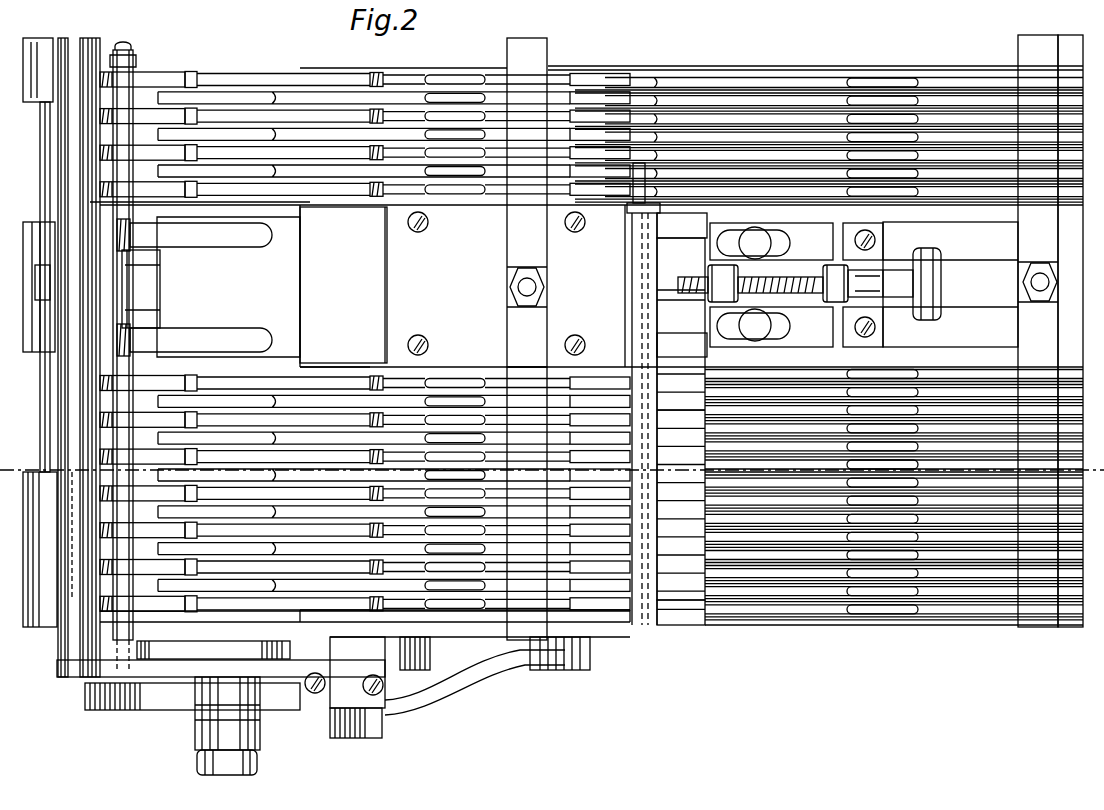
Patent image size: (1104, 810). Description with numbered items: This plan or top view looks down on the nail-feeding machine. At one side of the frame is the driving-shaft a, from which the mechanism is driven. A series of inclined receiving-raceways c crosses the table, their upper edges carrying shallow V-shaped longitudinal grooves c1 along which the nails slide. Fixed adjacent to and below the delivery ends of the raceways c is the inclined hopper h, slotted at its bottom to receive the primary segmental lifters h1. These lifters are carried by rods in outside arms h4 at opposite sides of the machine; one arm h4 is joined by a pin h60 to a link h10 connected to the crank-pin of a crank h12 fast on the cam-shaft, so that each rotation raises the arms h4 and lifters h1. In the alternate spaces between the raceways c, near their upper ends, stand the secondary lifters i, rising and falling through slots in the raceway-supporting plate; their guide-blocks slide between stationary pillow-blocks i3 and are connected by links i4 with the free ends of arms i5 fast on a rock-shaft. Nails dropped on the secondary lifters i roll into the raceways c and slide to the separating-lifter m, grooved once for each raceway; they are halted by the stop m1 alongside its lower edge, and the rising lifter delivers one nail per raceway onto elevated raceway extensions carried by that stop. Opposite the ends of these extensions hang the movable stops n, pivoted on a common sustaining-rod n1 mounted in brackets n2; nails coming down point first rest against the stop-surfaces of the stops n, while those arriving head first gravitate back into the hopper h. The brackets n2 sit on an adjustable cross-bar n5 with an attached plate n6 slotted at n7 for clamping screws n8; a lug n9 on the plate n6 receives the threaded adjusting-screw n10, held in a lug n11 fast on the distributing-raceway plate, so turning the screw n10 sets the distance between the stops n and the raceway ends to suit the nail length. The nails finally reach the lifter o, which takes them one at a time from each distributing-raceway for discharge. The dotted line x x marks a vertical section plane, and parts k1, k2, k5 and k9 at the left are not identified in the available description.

The driving-shaft a is at (892, 380).
The receiving-raceways c is at (430, 373).
The longitudinal grooves c1 is at (345, 378).
The inclined hopper h is at (272, 437).
The segmental lifters h1 is at (220, 410).
The outside arms h4 is at (97, 672).
The link h10 is at (205, 728).
The crank or disk h12 is at (124, 708).
The pin h60 is at (72, 641).
The secondary lifters i is at (322, 712).
The stationary pillow-blocks i3 is at (436, 650).
The links i4 is at (352, 722).
The arms i5 is at (460, 690).
The side block k1 is at (30, 325).
The upright post k2 is at (45, 375).
The upright post k5 is at (72, 402).
The hub bars k9 is at (262, 420).
The separating-lifter m is at (527, 202).
The stop m1 is at (527, 372).
The movable stops n is at (655, 372).
The sustaining-rod n1 is at (612, 222).
The brackets n2 is at (678, 637).
The adjustable cross-bar n5 is at (681, 410).
The plate n6 is at (750, 271).
The slots n7 is at (730, 240).
The clamping bolts or screws n8 is at (757, 237).
The lug n9 is at (708, 272).
The threaded adjusting-screw n10 is at (797, 278).
The lug n11 is at (885, 276).
The lifter o is at (1050, 331).
The dotted line x x is at (552, 467).